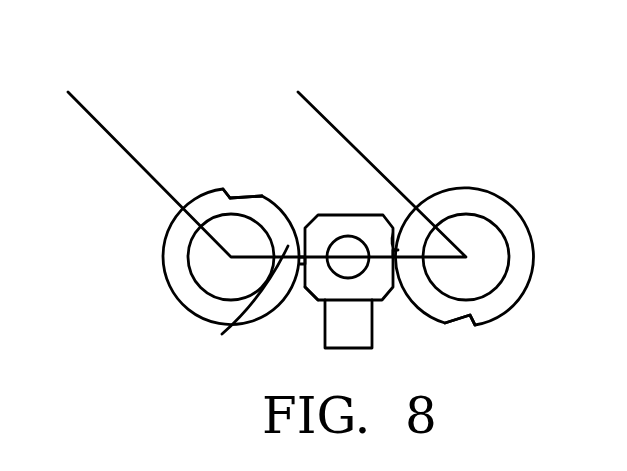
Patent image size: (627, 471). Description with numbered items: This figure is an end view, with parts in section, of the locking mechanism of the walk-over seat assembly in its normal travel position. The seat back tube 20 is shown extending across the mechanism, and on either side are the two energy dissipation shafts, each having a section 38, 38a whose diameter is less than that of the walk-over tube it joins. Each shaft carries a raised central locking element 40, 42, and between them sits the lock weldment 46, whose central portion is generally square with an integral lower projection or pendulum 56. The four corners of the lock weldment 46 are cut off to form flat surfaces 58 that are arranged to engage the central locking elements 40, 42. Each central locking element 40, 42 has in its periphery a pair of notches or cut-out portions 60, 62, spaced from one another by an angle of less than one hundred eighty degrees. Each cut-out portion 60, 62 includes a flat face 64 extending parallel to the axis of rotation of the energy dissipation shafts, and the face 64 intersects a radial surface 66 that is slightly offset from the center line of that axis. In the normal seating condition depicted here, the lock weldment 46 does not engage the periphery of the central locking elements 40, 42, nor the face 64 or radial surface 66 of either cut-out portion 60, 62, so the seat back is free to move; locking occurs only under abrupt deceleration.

The seat back tube 20 is at (105, 129).
The reduced-diameter section 38 is at (485, 283).
The reduced-diameter section 38a is at (212, 273).
The central locking element 40 is at (173, 256).
The central locking element 42 is at (497, 210).
The lock weldment 46 is at (325, 228).
The pendulum 56 is at (340, 342).
The flat surfaces 58 is at (302, 250).
The notch or cut-out portion 60 is at (236, 192).
The notch or cut-out portion 62 is at (312, 292).
The flat face 64 is at (254, 190).
The radial surface 66 is at (226, 190).